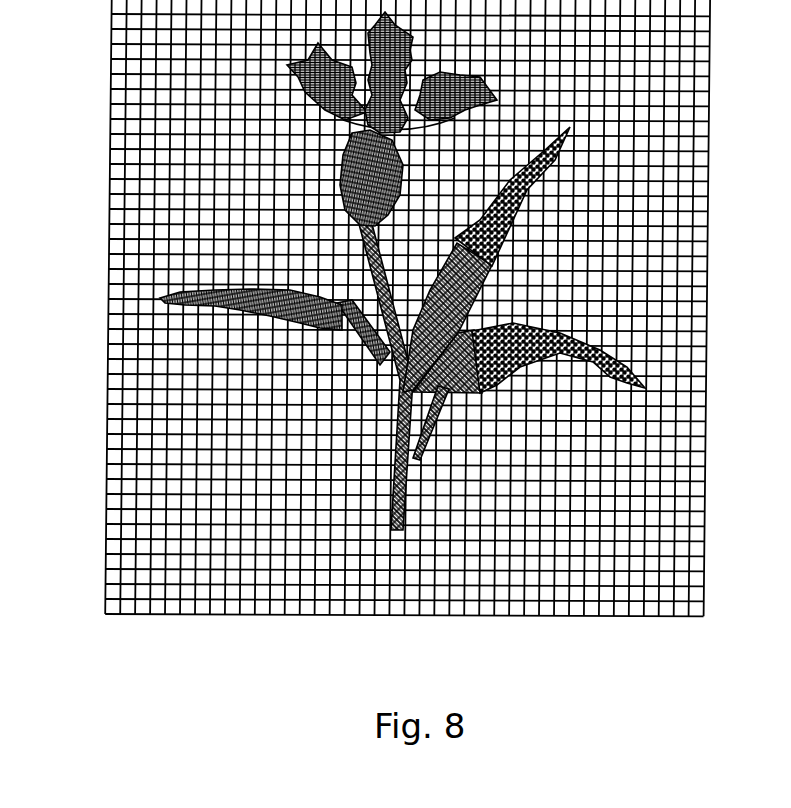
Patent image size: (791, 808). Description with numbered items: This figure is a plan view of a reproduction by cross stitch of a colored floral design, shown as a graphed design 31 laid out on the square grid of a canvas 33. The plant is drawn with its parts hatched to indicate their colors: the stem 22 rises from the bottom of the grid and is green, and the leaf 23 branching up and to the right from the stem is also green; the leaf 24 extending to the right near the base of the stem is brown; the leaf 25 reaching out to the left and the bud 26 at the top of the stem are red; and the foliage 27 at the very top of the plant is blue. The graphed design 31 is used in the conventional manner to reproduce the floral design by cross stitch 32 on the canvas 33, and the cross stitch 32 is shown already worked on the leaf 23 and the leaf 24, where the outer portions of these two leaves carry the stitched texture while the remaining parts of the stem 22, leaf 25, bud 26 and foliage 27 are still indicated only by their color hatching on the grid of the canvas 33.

The stem 22 is at (387, 307).
The leaf 23 is at (533, 323).
The leaf 24 is at (467, 391).
The leaf 25 is at (268, 311).
The bud 26 is at (341, 174).
The foliage 27 is at (300, 100).
The graphed design 31 is at (352, 368).
The cross stitch 32 is at (538, 172).
The canvas 33 is at (88, 421).